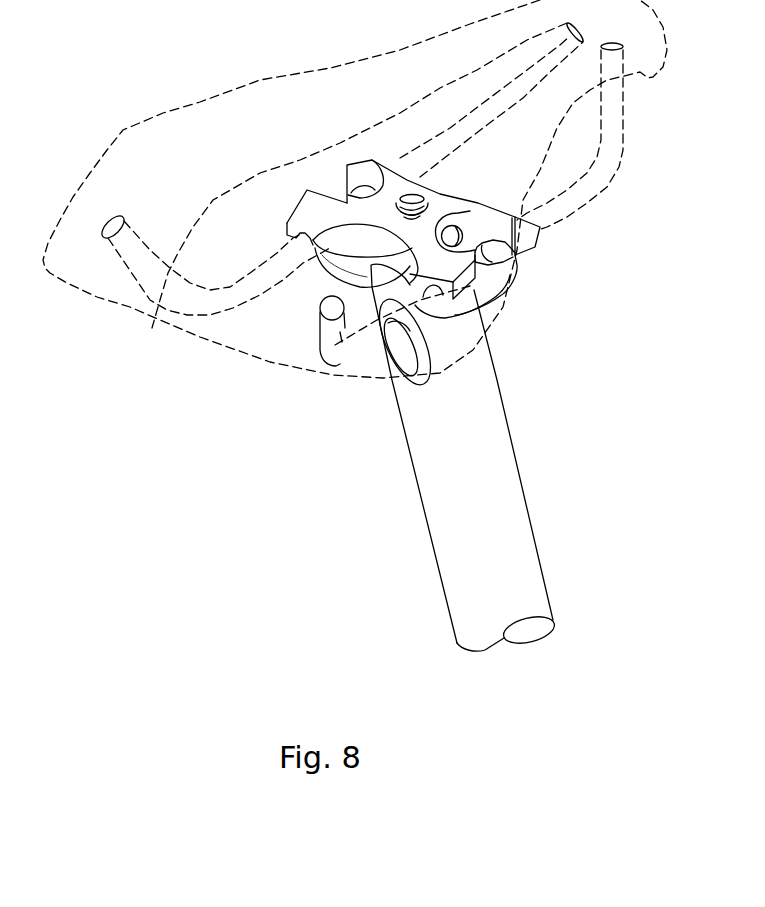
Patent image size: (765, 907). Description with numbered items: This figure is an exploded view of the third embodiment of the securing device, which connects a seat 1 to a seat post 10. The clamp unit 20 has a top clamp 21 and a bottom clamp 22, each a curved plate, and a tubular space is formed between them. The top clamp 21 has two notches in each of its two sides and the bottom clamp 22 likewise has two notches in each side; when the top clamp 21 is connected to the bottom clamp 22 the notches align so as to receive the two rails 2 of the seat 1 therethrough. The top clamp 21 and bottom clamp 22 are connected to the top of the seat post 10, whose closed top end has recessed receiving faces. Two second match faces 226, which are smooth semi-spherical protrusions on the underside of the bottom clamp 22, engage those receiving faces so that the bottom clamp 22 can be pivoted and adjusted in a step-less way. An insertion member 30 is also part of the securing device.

The seat 1 is at (118, 123).
The rails 2 is at (618, 158).
The seat post 10 is at (522, 548).
The clamp unit 20 is at (326, 174).
The top clamp 21 is at (537, 256).
The bottom clamp 22 is at (382, 308).
The second match faces 226 is at (332, 255).
The insertion member 30 is at (442, 357).